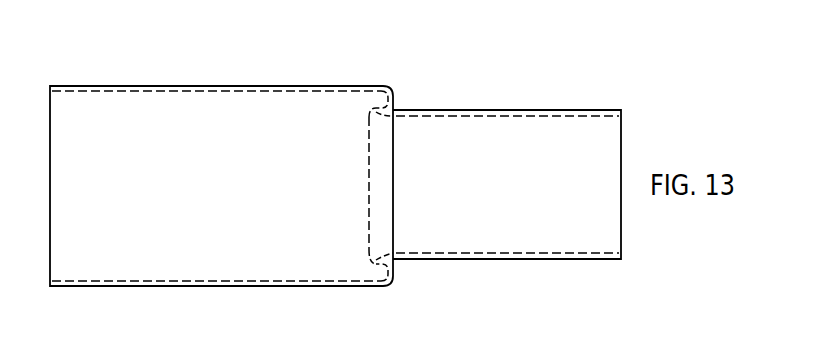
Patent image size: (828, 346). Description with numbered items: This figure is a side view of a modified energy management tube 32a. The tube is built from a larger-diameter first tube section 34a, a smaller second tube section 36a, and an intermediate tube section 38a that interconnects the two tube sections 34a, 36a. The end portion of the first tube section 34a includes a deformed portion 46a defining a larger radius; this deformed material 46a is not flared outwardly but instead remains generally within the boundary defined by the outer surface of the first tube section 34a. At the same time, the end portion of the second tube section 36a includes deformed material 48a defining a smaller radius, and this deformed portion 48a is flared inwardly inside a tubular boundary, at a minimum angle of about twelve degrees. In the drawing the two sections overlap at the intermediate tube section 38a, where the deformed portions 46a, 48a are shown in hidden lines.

The second energy management tube 32a is at (574, 56).
The first tube section 34a is at (137, 85).
The second tube section 36a is at (481, 110).
The intermediate tube section 38a is at (401, 84).
The deformed portion 46a is at (394, 97).
The deformed material 48a is at (376, 112).